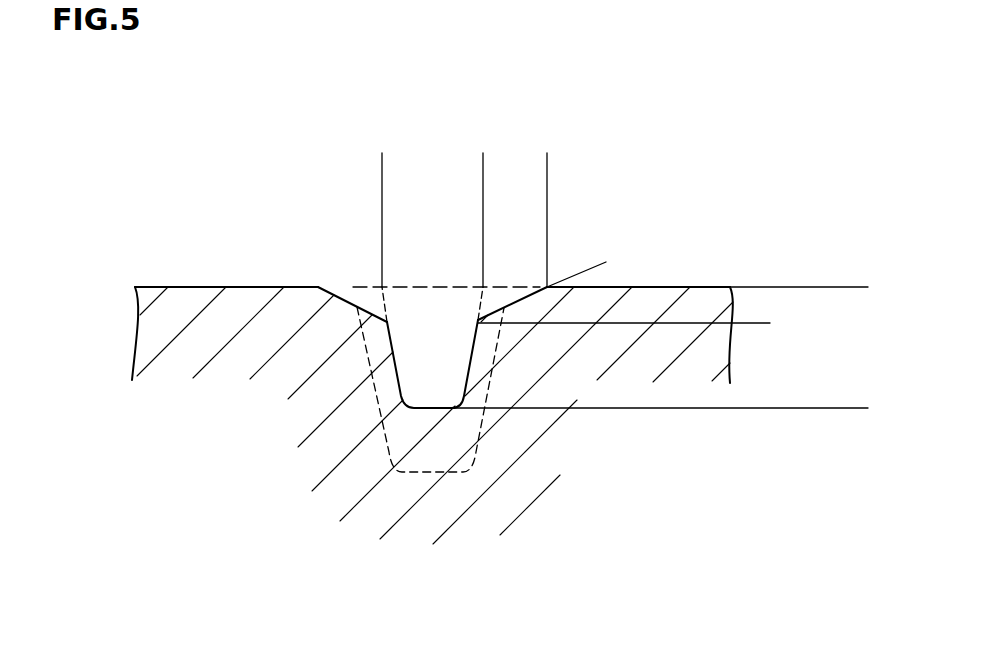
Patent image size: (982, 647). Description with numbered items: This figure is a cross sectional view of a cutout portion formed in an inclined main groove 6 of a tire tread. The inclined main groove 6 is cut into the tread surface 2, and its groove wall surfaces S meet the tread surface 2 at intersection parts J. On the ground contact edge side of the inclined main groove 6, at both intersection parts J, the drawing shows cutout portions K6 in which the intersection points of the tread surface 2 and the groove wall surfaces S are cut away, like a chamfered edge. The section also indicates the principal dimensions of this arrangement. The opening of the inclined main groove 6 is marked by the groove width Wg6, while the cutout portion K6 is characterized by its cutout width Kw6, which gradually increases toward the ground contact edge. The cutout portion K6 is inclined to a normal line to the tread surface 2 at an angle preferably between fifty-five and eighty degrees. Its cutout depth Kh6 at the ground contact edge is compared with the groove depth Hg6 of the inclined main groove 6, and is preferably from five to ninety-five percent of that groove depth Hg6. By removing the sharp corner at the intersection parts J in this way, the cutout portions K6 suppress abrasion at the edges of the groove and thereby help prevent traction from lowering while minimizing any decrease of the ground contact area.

The tread surface 2 is at (210, 287).
The inclined main groove 6 is at (420, 348).
The cutout portion K6 is at (350, 303).
The intersection part J is at (386, 283).
The groove wall surface S is at (468, 359).
The groove width Wg6 is at (483, 158).
The cutout width Kw6 is at (483, 158).
The cutout depth Kh6 is at (763, 257).
The groove depth Hg6 is at (862, 287).